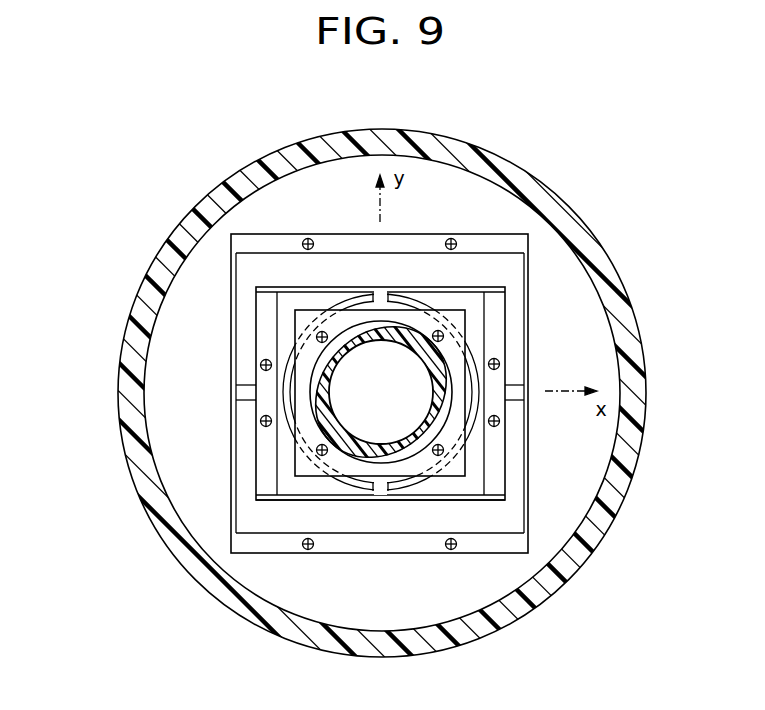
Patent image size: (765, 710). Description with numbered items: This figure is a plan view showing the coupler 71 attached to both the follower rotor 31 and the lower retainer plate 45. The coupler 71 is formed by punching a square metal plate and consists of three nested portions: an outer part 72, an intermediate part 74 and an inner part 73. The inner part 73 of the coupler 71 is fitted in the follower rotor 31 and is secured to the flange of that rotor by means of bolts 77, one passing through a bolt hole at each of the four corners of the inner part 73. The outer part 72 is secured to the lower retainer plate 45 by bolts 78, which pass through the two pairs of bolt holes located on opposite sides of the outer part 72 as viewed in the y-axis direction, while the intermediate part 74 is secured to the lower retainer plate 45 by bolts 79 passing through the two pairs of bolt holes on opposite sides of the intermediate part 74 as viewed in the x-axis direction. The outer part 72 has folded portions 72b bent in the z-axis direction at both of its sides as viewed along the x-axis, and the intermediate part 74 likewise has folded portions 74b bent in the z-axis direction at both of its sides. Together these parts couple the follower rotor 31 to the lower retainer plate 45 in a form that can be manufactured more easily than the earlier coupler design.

The follower rotor 31 is at (318, 403).
The lower retainer plate 45 is at (556, 211).
The coupler 71 is at (439, 212).
The outer part 72 is at (338, 224).
The folded portions 72b is at (529, 282).
The inner part 73 is at (466, 471).
The intermediate part 74 is at (516, 322).
The folded portions 74b is at (256, 498).
The bolts 77 is at (317, 339).
The bolts 78 is at (307, 238).
The bolts 79 is at (500, 364).